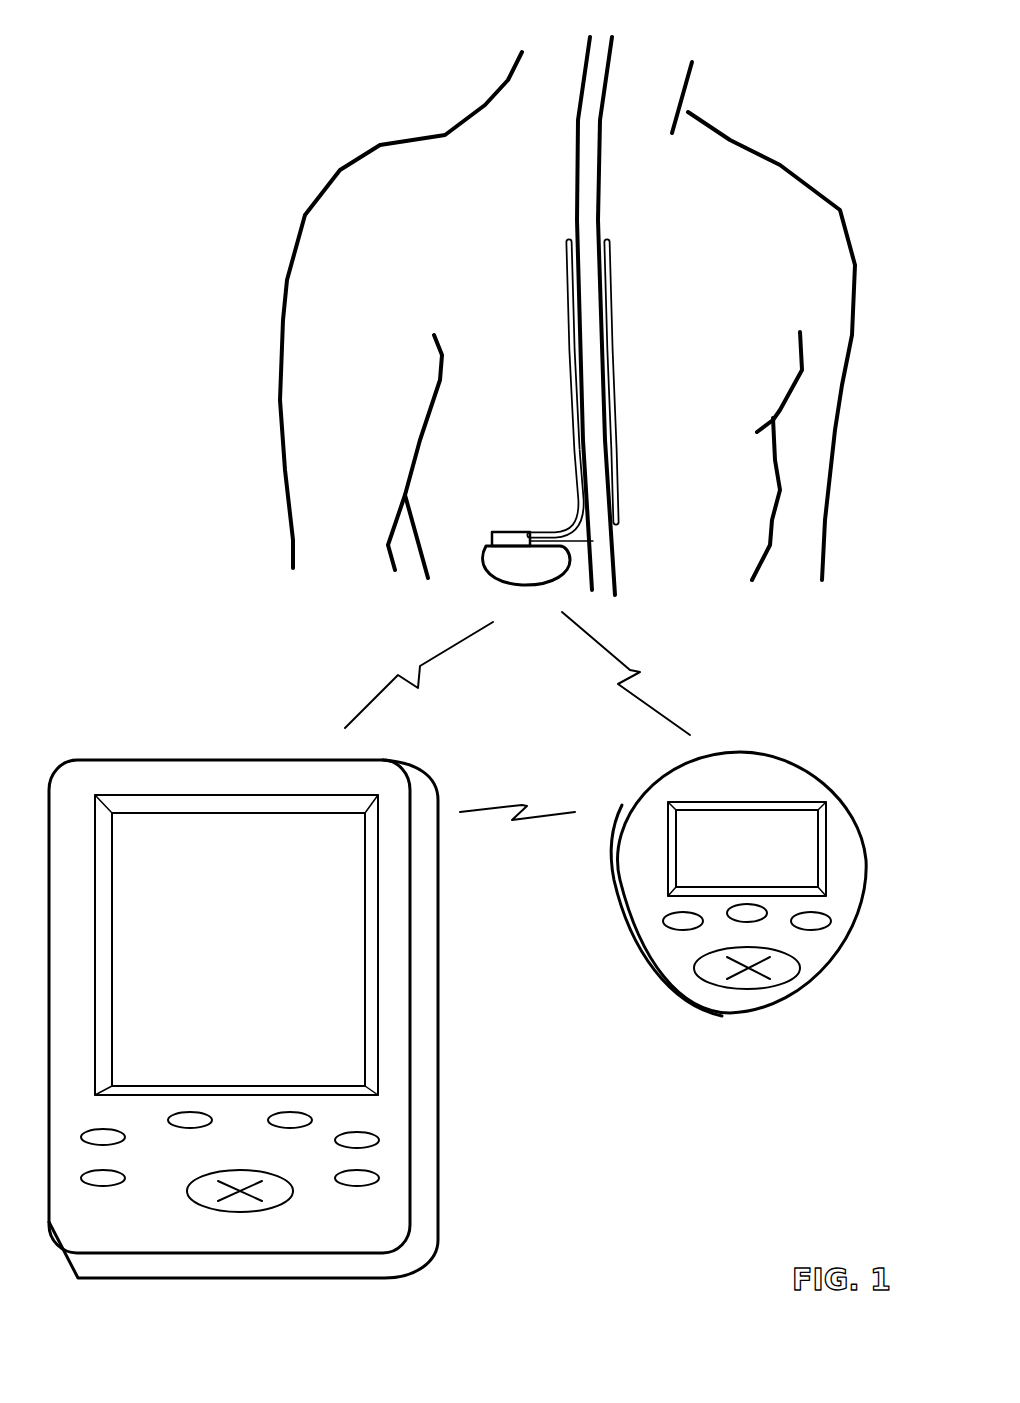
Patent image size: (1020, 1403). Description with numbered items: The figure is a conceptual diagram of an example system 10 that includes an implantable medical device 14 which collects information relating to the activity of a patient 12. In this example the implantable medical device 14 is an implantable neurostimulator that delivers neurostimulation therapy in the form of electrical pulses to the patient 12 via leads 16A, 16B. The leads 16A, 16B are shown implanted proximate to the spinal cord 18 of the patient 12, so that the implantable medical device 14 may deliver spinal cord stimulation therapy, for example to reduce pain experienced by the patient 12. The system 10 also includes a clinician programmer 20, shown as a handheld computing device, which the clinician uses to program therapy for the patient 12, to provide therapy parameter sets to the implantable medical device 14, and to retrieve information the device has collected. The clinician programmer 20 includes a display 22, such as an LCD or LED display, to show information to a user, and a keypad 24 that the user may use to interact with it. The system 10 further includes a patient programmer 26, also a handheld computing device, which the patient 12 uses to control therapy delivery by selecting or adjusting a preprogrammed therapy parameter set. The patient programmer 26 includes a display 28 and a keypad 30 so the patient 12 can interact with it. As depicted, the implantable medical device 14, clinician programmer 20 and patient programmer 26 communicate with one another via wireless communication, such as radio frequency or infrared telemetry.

The system 10 is at (151, 128).
The patient 12 is at (781, 148).
The implantable medical device 14 is at (483, 538).
The lead 16A is at (560, 363).
The lead 16B is at (625, 358).
The spinal cord 18 is at (616, 191).
The clinician programmer 20 is at (307, 985).
The display 22 is at (326, 945).
The keypad 24 is at (340, 1200).
The patient programmer 26 is at (707, 859).
The display 28 is at (692, 862).
The keypad 30 is at (693, 948).